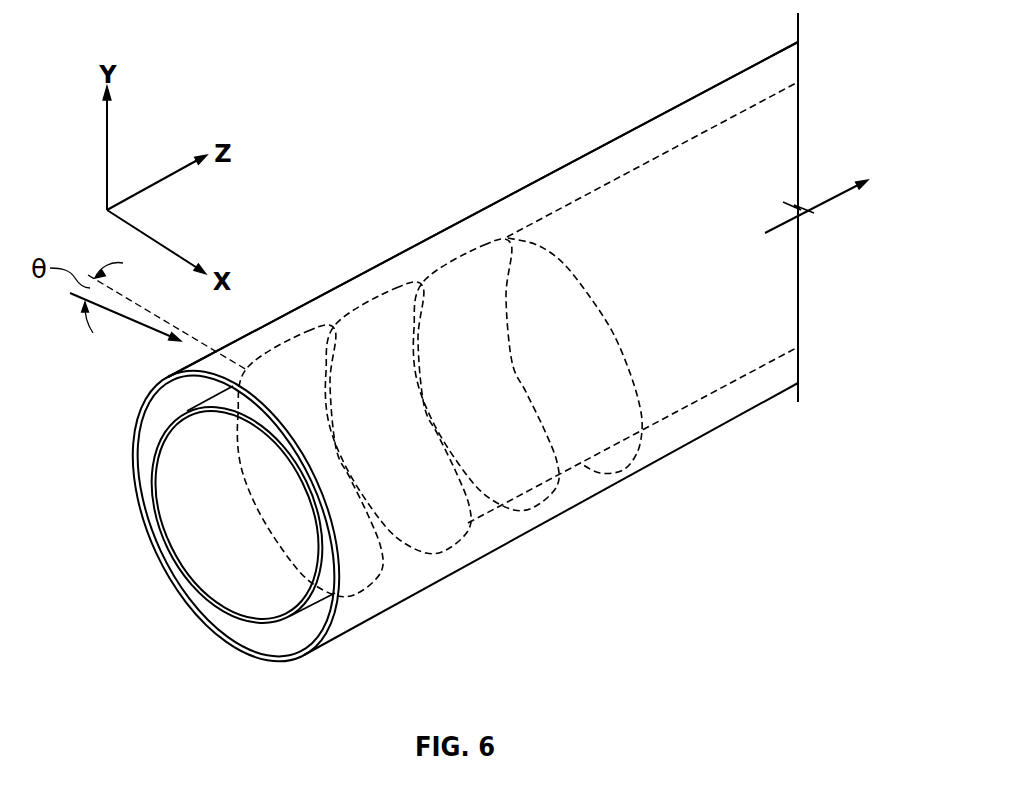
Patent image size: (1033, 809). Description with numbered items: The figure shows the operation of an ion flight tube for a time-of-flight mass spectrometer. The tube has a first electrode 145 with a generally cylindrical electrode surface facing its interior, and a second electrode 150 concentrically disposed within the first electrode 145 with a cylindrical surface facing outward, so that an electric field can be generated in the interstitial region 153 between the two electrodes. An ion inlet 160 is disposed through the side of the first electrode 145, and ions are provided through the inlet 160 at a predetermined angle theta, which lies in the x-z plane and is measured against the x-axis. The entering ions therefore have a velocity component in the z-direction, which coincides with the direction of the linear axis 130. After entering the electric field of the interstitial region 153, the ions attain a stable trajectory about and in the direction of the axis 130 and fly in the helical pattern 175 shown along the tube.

The linear axis 130 is at (500, 334).
The first electrode 145 is at (347, 280).
The second electrode 150 is at (163, 517).
The interstitial region 153 is at (140, 455).
The ion inlet 160 is at (205, 352).
The helical flight pattern 175 is at (453, 553).